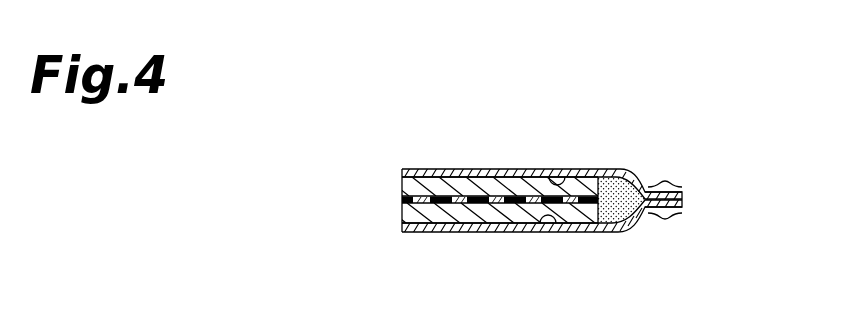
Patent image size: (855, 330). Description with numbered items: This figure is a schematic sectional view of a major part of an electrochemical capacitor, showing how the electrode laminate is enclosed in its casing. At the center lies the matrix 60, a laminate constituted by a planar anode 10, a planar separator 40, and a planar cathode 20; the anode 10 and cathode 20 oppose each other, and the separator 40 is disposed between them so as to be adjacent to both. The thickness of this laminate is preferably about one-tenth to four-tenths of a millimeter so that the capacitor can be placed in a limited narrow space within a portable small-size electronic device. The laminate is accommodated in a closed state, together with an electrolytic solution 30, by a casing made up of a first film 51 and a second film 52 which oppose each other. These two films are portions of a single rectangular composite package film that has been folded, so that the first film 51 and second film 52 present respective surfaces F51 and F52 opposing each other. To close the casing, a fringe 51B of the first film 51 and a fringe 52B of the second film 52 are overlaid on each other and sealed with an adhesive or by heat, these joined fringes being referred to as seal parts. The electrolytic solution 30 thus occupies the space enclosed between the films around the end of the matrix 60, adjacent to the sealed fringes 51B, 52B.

The matrix 60 is at (315, 135).
The anode 10 is at (400, 184).
The separator 40 is at (402, 200).
The cathode 20 is at (400, 214).
The first film 51 is at (500, 168).
The second film 52 is at (490, 234).
The surface of the first film F51 is at (571, 178).
The surface of the second film F52 is at (553, 230).
The electrolytic solution 30 is at (612, 232).
The fringe of the first film 51B is at (665, 183).
The fringe of the second film 52B is at (665, 217).